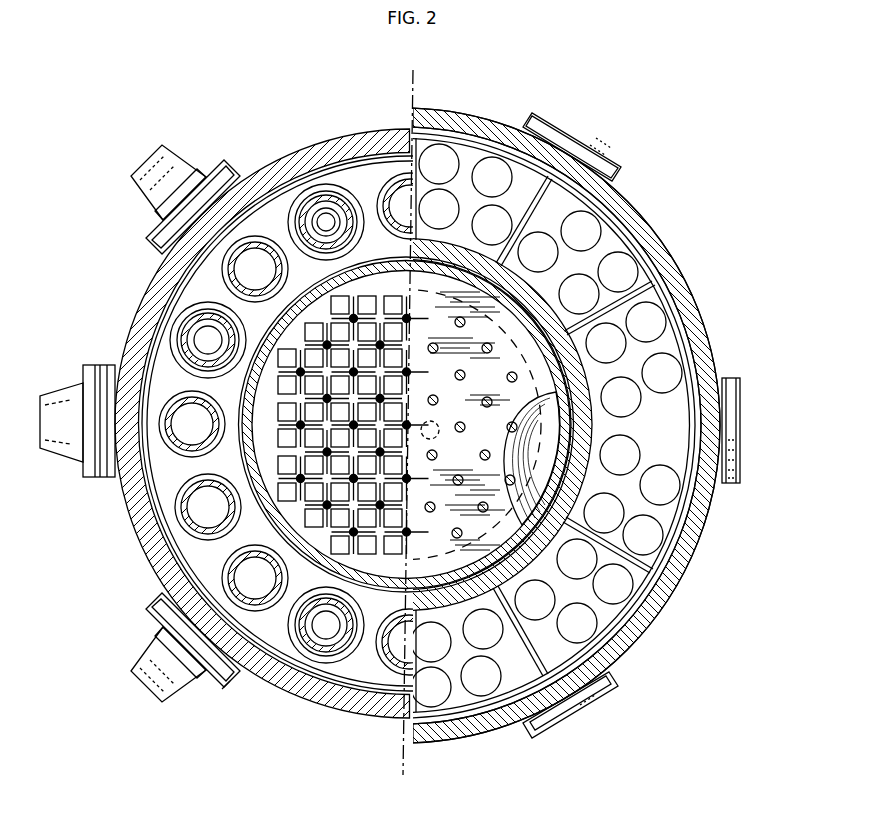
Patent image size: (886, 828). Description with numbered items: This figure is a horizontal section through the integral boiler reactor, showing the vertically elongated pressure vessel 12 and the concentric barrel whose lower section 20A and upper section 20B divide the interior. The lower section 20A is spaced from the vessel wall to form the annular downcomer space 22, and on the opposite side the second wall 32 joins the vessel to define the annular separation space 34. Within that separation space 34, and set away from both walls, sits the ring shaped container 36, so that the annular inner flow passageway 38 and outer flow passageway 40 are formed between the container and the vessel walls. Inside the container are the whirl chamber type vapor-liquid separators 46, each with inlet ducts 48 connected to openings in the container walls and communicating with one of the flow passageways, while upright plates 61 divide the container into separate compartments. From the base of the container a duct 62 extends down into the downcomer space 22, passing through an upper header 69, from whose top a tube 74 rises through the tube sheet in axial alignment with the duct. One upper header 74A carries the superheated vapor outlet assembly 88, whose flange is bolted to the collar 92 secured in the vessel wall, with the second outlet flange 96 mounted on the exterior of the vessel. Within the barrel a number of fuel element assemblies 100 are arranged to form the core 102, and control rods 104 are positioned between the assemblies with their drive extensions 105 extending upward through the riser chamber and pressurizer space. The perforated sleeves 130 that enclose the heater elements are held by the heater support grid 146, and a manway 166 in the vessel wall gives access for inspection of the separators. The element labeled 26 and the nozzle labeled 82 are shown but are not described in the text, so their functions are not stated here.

The pressure vessel 12 is at (155, 281).
The lower section of barrel 20A is at (262, 530).
The upper section of barrel 20B is at (468, 582).
The downcomer space 22 is at (409, 423).
The control element 26 is at (545, 433).
The second wall 32 is at (572, 508).
The separation space 34 is at (402, 425).
The ring shaped container 36 is at (690, 385).
The inner flow passageway 38 is at (505, 263).
The outer flow passageway 40 is at (553, 167).
The vapor-liquid separators 46 is at (652, 548).
The inlet ducts 48 is at (485, 158).
The upright plates 61 is at (645, 285).
The duct 62 is at (325, 205).
The upper header 69 is at (318, 663).
The tube 74 is at (312, 197).
The upper header 74A is at (150, 503).
The inlet nozzle 82 is at (158, 370).
The superheated vapor outlet assembly 88 is at (203, 693).
The collar 92 is at (150, 600).
The second outlet flange 96 is at (145, 657).
The fuel element assemblies 100 is at (340, 550).
The core 102 is at (207, 318).
The control rods 104 is at (355, 317).
The drive extensions 105 is at (433, 354).
The perforated sleeve 130 is at (431, 440).
The heater support grid 146 is at (469, 421).
The manway 166 is at (740, 428).